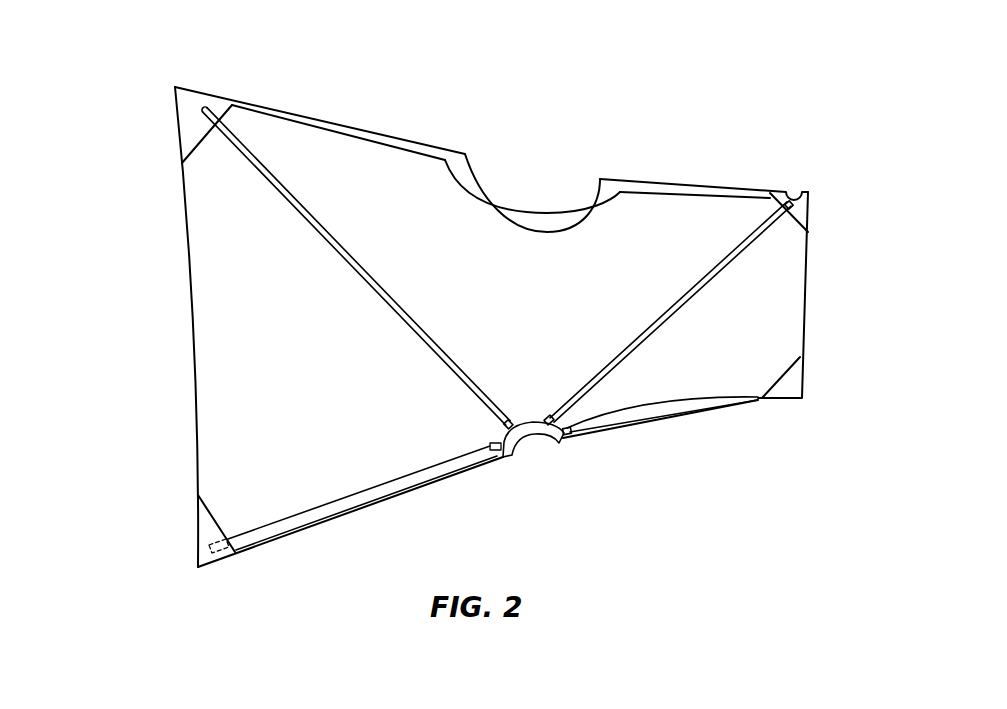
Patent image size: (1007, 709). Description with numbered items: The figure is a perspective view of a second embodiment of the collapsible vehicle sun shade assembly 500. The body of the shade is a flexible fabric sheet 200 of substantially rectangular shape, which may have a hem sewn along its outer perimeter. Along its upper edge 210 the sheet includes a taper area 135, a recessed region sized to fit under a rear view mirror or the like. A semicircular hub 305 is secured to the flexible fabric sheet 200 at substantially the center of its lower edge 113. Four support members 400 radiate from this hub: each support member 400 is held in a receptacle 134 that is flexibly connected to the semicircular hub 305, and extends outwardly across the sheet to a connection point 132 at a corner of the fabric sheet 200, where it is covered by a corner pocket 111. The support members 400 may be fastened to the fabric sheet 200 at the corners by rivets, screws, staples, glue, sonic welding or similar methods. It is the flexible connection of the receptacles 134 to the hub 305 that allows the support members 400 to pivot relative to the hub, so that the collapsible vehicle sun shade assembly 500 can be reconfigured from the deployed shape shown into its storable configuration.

The collapsible vehicle sun shade assembly 500 is at (166, 283).
The flexible fabric sheet 200 is at (316, 422).
The upper edge 210 is at (392, 138).
The taper area 135 is at (483, 180).
The corner pocket 111 is at (193, 118).
The support member 400 is at (683, 403).
The semicircular hub 305 is at (522, 450).
The receptacle 134 is at (497, 456).
The lower edge 113 is at (338, 518).
The connection point 132 is at (220, 551).